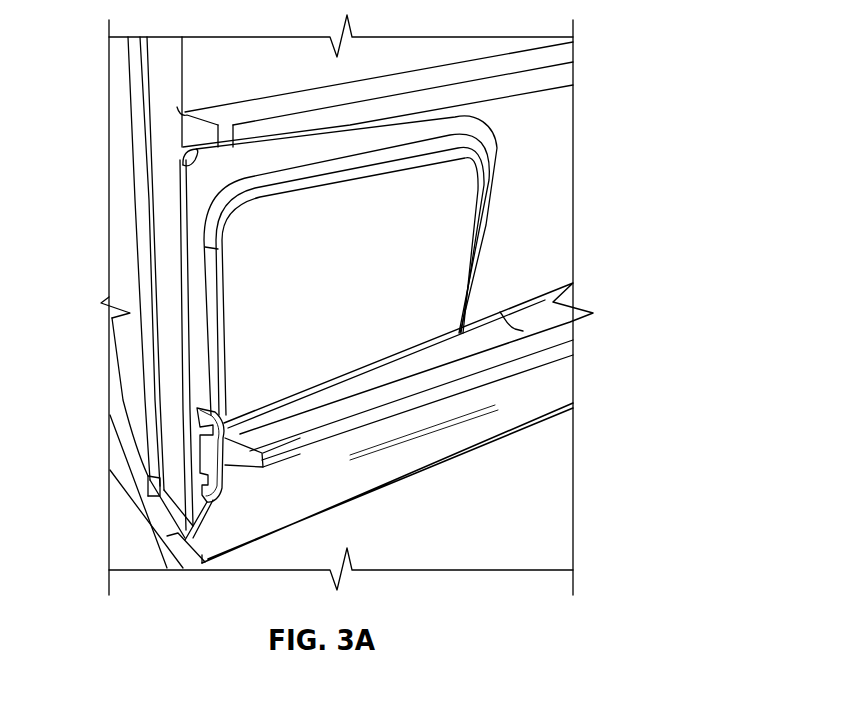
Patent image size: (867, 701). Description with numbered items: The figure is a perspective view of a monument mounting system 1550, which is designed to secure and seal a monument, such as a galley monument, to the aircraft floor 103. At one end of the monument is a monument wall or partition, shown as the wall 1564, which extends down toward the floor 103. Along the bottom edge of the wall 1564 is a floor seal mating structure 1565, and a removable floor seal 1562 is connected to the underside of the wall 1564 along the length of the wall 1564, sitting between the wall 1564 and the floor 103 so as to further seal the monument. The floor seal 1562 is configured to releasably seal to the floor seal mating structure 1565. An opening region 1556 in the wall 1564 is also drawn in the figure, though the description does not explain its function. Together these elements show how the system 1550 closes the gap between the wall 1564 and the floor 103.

The monument mounting system 1550 is at (619, 46).
The aircraft floor 103 is at (560, 477).
The window frame 1556 is at (447, 248).
The wall 1564 is at (557, 265).
The floor seal mating structure 1565 is at (573, 288).
The removable floor seal 1562 is at (560, 390).